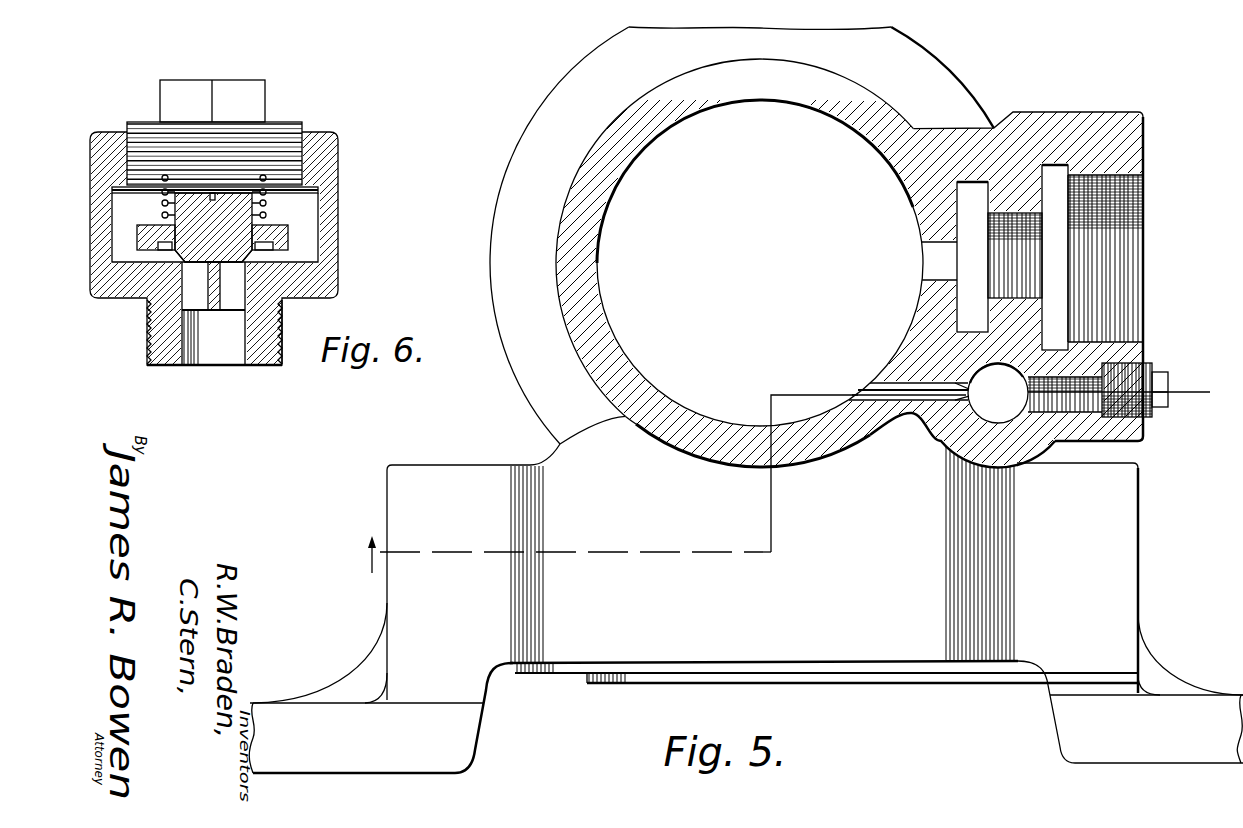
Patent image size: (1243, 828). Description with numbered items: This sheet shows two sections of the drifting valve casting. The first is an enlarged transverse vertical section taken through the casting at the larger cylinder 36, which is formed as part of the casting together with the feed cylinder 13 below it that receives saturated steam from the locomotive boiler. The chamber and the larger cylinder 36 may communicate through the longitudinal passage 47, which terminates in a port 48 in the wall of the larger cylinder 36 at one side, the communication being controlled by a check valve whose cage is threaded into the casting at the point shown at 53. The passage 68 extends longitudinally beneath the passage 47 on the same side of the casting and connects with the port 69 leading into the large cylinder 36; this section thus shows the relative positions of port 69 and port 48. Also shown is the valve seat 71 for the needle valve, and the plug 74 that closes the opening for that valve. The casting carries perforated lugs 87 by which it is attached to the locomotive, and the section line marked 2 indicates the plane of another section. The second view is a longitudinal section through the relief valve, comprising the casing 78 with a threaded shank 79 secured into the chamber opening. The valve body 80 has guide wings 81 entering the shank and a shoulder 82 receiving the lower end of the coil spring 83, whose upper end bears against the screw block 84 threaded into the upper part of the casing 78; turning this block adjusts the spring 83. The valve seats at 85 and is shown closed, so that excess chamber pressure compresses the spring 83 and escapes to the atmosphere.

In FIG. 5, the section line 2- 2 is at (774, 482).
In FIG. 5, the feed cylinder 13 is at (870, 648).
In FIG. 5, the larger cylinder 36 is at (875, 93).
In FIG. 5, the longitudinal passage 47 is at (1058, 238).
In FIG. 5, the port 48 is at (931, 267).
In FIG. 5, the threaded point 53 is at (988, 235).
In FIG. 5, the passage 68 is at (998, 393).
In FIG. 5, the port 69 is at (872, 392).
In FIG. 5, the valve seat 71 is at (962, 412).
In FIG. 5, the plug 74 is at (1138, 373).
In FIG. 6, the casing 78 is at (338, 205).
In FIG. 6, the threaded shank 79 is at (280, 357).
In FIG. 6, the valve body 80 is at (197, 272).
In FIG. 6, the guide wings 81 is at (228, 300).
In FIG. 6, the shoulder 82 is at (290, 240).
In FIG. 6, the coil spring 83 is at (268, 200).
In FIG. 6, the screw block 84 is at (270, 128).
In FIG. 6, the valve seat 85 is at (198, 250).
In FIG. 5, the perforated lugs 87 is at (1205, 750).